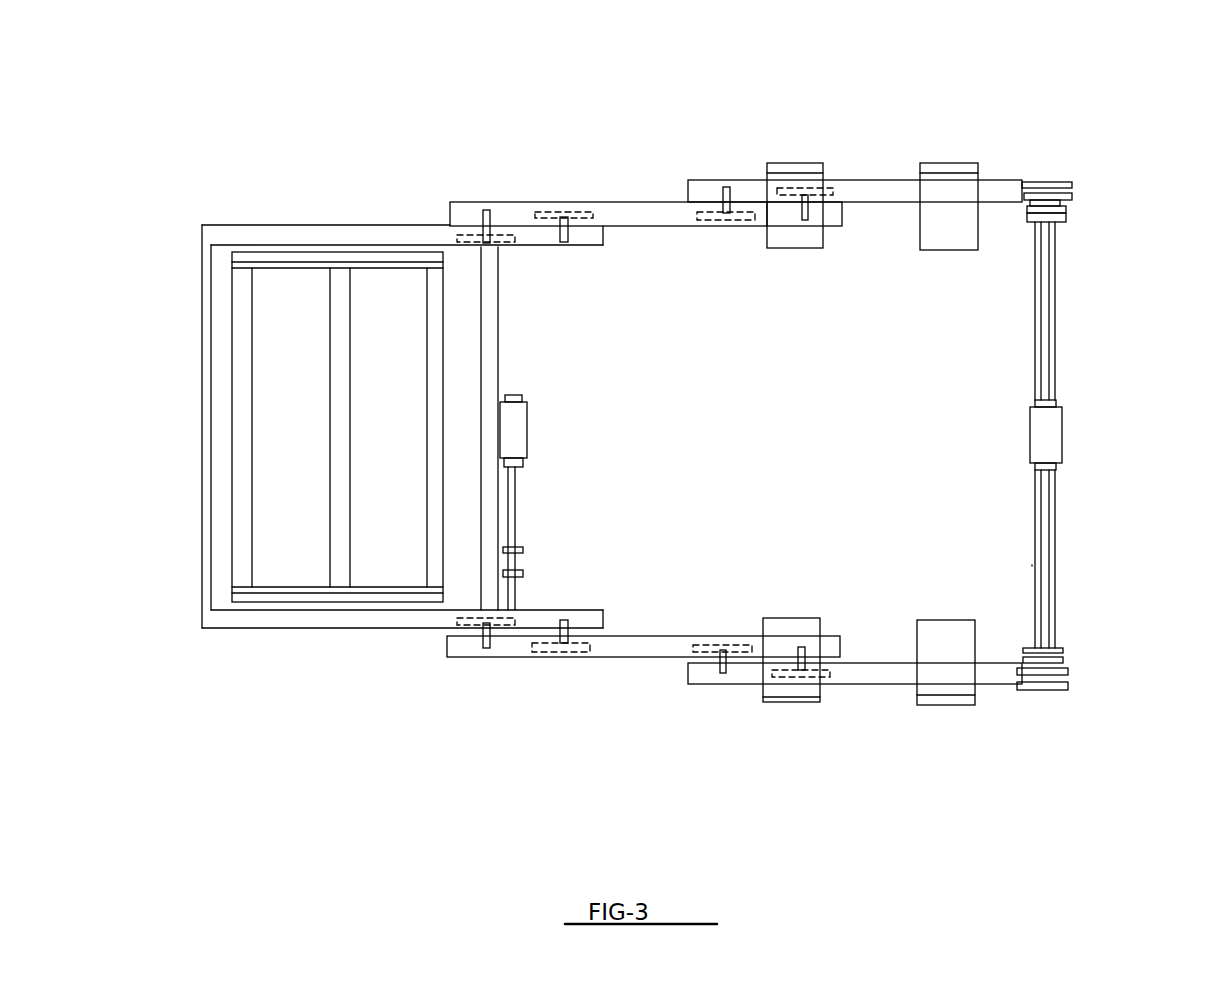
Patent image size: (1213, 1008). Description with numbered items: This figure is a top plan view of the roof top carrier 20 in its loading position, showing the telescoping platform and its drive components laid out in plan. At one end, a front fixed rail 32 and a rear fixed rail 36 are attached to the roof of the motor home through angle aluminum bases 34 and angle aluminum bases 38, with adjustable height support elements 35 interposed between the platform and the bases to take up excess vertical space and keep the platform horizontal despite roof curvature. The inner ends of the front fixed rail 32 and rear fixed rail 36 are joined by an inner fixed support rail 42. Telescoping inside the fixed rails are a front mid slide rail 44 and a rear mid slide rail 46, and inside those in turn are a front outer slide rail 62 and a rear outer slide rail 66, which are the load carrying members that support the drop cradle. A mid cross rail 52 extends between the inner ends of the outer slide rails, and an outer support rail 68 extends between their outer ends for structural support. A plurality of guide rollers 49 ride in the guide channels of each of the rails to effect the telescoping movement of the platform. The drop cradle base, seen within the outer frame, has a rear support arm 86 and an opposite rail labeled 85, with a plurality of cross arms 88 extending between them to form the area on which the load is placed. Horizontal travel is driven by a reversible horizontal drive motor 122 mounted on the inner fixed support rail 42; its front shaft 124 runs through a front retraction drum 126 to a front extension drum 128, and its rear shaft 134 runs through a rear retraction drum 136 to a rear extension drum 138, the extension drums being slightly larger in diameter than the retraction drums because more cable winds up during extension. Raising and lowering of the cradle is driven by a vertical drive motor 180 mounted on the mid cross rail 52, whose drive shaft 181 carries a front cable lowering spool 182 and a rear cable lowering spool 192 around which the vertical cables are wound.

The roof top carrier 20 is at (622, 112).
The front fixed rail 32 is at (997, 680).
The angle aluminum bases 34 is at (943, 700).
The adjustable height support elements 35 is at (770, 685).
The rear fixed rail 36 is at (995, 188).
The angle aluminum bases 38 is at (785, 170).
The inner fixed support rail 42 is at (1032, 565).
The front mid slide rail 44 is at (777, 648).
The rear mid slide rail 46 is at (782, 215).
The guide rollers 49 is at (548, 212).
The mid cross rail 52 is at (486, 305).
The front outer slide rail 62 is at (298, 622).
The rear outer slide rail 66 is at (358, 232).
The outer support rail 68 is at (214, 412).
The lower rail 85 is at (380, 592).
The rear support arm 86 is at (389, 267).
The cross arms 88 is at (248, 395).
The horizontal drive motor 122 is at (1052, 438).
The front shaft 124 is at (1048, 513).
The front retraction drum 126 is at (1063, 655).
The front extension drum 128 is at (1068, 684).
The rear shaft 134 is at (1048, 325).
The rear retraction drum 136 is at (1066, 218).
The rear extension drum 138 is at (1072, 185).
The vertical drive motor 180 is at (518, 432).
The drive shaft 181 is at (512, 507).
The front cable lowering spool 182 is at (520, 573).
The rear cable lowering spool 192 is at (520, 548).